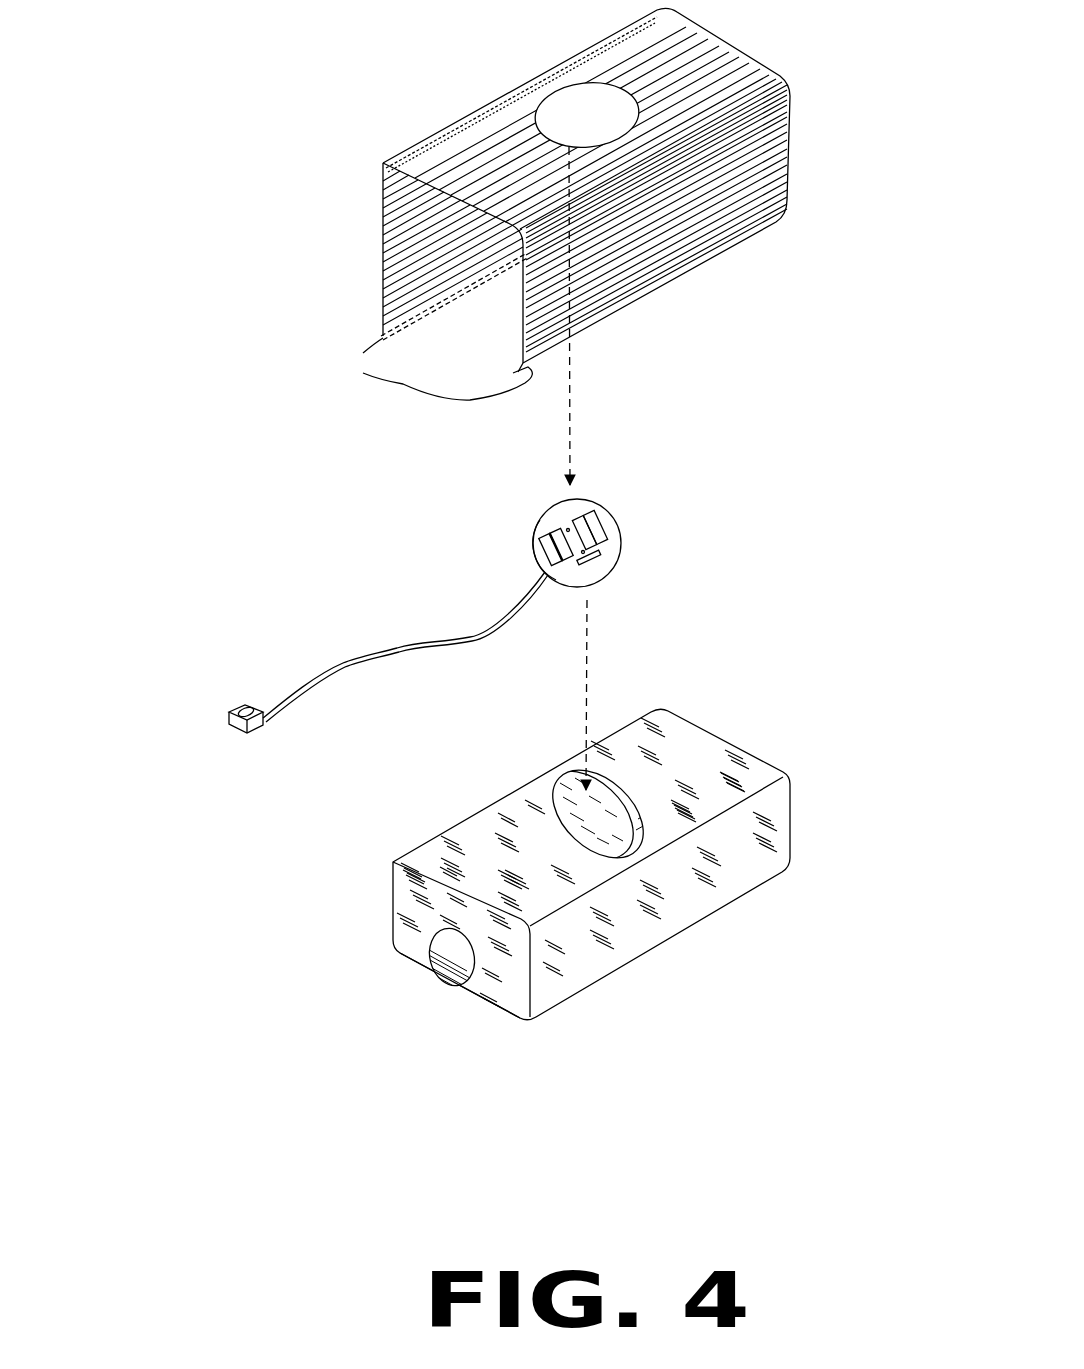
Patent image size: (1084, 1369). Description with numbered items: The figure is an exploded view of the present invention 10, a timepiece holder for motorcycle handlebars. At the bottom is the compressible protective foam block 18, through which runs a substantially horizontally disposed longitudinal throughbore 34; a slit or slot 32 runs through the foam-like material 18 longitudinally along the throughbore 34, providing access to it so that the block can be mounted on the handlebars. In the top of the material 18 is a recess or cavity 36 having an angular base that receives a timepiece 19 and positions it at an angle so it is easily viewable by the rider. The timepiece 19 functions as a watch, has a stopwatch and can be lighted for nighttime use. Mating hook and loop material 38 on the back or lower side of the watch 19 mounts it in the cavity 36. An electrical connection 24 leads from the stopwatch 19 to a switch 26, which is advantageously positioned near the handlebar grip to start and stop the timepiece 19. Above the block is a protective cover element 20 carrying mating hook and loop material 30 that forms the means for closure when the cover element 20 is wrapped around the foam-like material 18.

The present invention 10 is at (256, 382).
The compressible protective foam block 18 is at (660, 913).
The timepiece 19 is at (615, 548).
The protective cover element 20 is at (630, 243).
The electrical connection 24 is at (465, 638).
The switch 26 is at (250, 718).
The mating hook and loop material 30 is at (422, 369).
The slit or slot 32 is at (447, 1000).
The longitudinal throughbore 34 is at (454, 954).
The recess or cavity 36 is at (644, 782).
The mating hook and loop material 38 is at (532, 547).